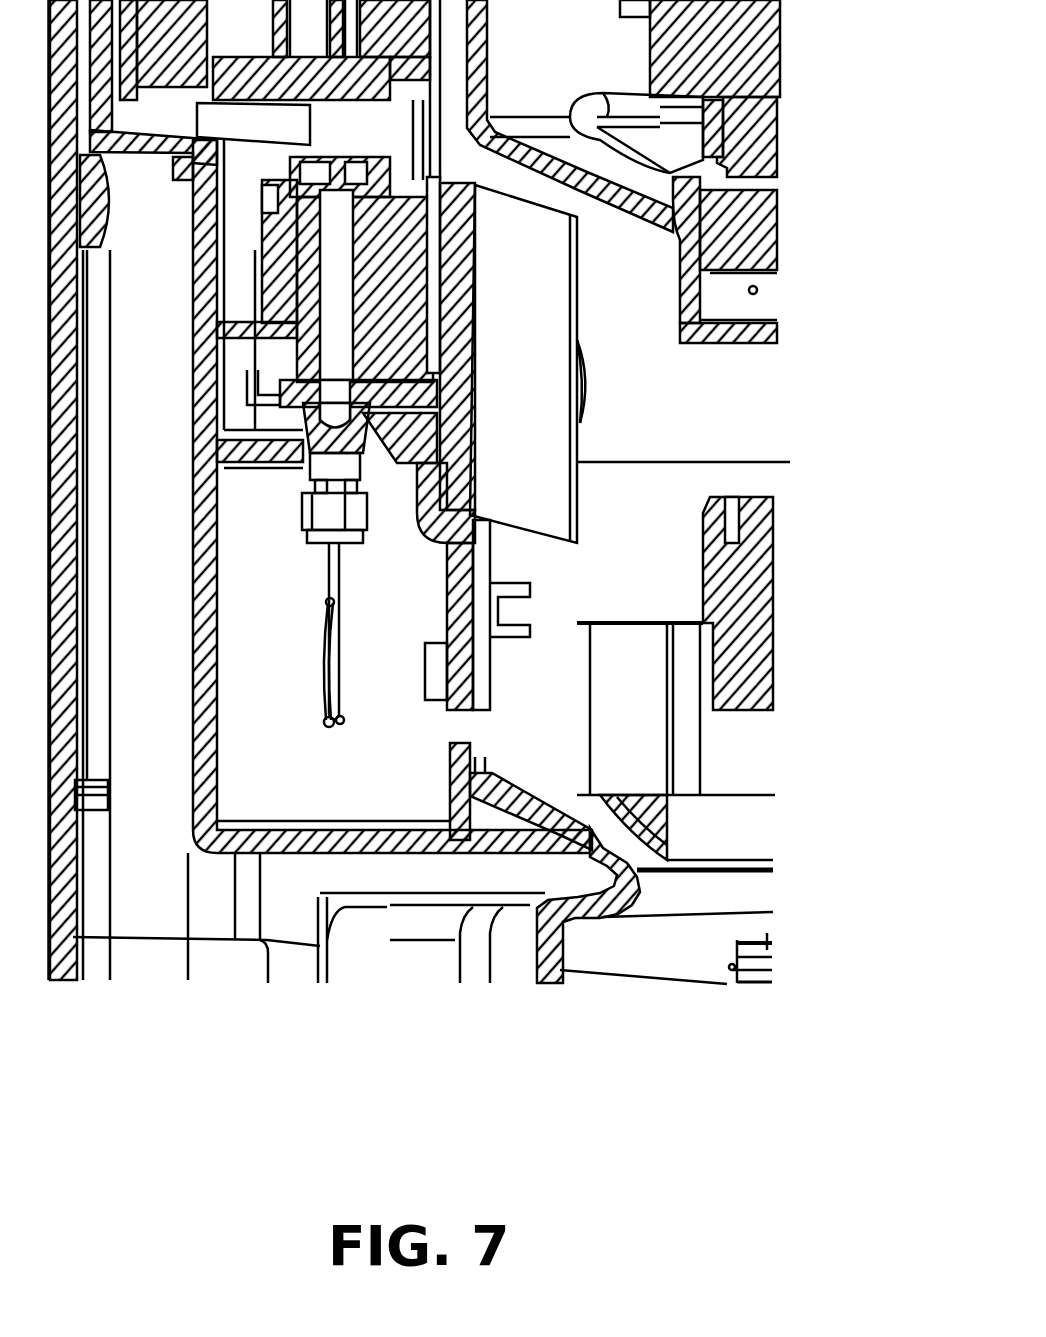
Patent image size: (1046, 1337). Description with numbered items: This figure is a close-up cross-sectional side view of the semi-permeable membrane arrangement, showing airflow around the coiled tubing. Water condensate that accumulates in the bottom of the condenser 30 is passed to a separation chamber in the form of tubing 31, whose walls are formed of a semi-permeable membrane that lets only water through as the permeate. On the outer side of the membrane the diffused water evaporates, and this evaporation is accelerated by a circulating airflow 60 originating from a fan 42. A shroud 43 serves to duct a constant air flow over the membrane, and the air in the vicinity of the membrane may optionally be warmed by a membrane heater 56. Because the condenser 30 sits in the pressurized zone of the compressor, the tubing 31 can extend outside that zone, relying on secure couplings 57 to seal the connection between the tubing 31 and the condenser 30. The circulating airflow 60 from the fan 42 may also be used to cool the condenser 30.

The condenser 30 is at (455, 268).
The tubing 31 is at (317, 668).
The fan 42 is at (767, 950).
The shroud 43 is at (207, 843).
The membrane heater 56 is at (387, 673).
The couplings 57 is at (366, 512).
The circulating airflow 60 is at (148, 637).